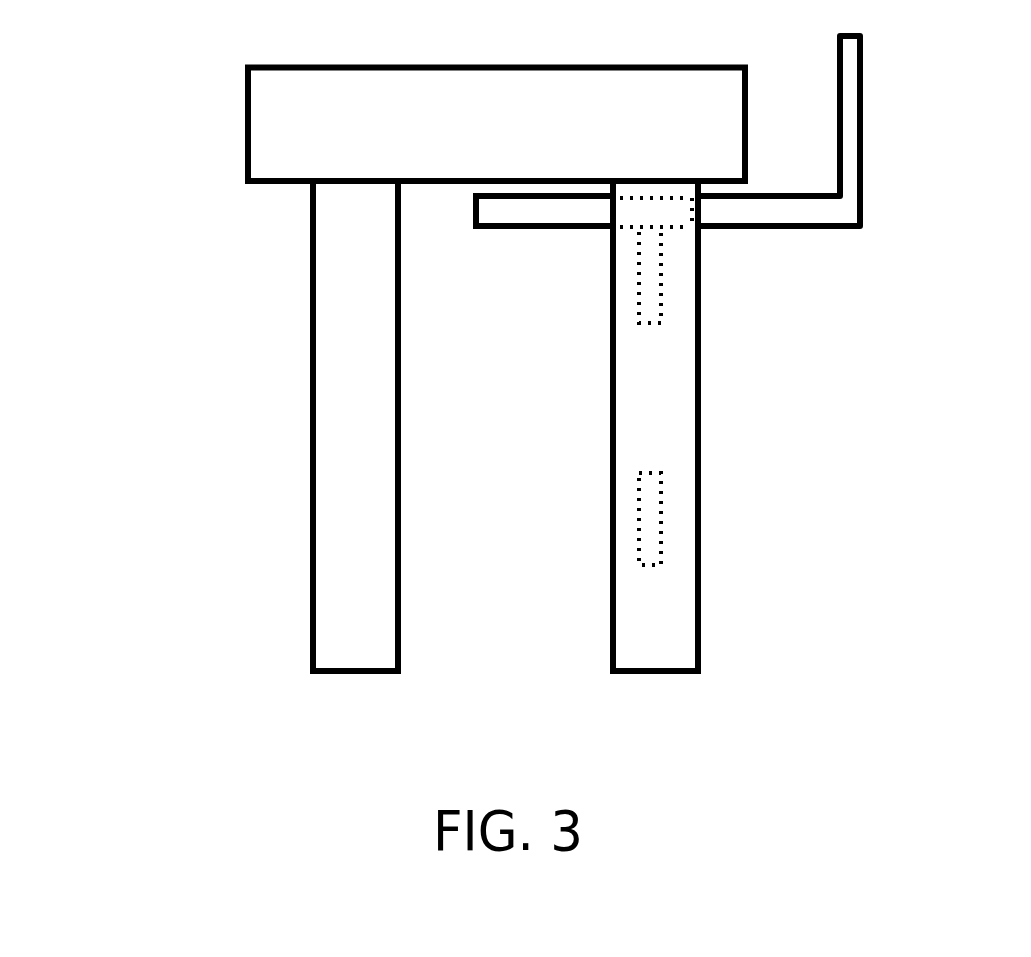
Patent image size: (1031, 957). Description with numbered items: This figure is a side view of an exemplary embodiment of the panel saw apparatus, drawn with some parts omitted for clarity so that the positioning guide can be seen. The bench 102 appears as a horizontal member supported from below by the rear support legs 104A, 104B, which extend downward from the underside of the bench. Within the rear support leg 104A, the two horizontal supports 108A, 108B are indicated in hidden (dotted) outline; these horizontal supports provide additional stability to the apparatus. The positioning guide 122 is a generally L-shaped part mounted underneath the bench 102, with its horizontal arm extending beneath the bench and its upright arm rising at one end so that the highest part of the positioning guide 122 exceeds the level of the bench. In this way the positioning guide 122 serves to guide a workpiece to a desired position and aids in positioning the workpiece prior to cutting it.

The bench 102 is at (277, 138).
The rear support leg 104A is at (683, 498).
The rear support leg 104B is at (328, 462).
The horizontal support 108A is at (640, 282).
The horizontal support 108B is at (638, 515).
The positioning guide 122 is at (855, 137).